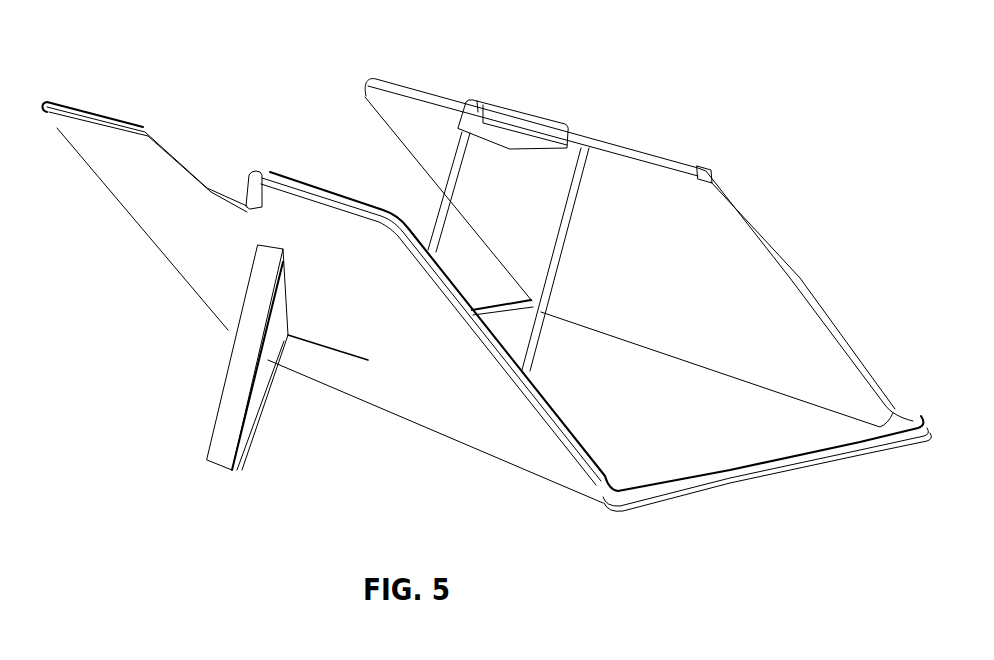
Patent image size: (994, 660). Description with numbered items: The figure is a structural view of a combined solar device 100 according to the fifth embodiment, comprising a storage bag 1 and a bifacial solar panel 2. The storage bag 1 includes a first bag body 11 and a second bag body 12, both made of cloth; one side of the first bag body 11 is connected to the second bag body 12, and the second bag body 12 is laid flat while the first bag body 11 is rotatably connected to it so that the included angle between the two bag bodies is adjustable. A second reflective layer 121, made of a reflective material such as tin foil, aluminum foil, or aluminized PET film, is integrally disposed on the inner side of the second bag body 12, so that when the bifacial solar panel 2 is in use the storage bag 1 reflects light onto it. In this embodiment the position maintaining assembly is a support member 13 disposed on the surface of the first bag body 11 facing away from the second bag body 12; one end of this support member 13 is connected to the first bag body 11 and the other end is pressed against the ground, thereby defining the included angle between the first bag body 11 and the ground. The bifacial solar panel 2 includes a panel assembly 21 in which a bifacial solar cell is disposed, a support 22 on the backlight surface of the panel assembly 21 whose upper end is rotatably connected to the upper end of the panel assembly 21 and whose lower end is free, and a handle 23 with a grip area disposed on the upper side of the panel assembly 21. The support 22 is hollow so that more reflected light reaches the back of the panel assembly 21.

The combined solar device 100 is at (77, 52).
The storage bag 1 is at (427, 405).
The first bag body 11 is at (202, 243).
The second bag body 12 is at (727, 480).
The second reflective layer 121 is at (752, 440).
The support stand 13 is at (246, 369).
The bifacial solar panel 2 is at (617, 13).
The panel assembly 21 is at (650, 228).
The support 22 is at (581, 146).
The handle 23 is at (536, 160).